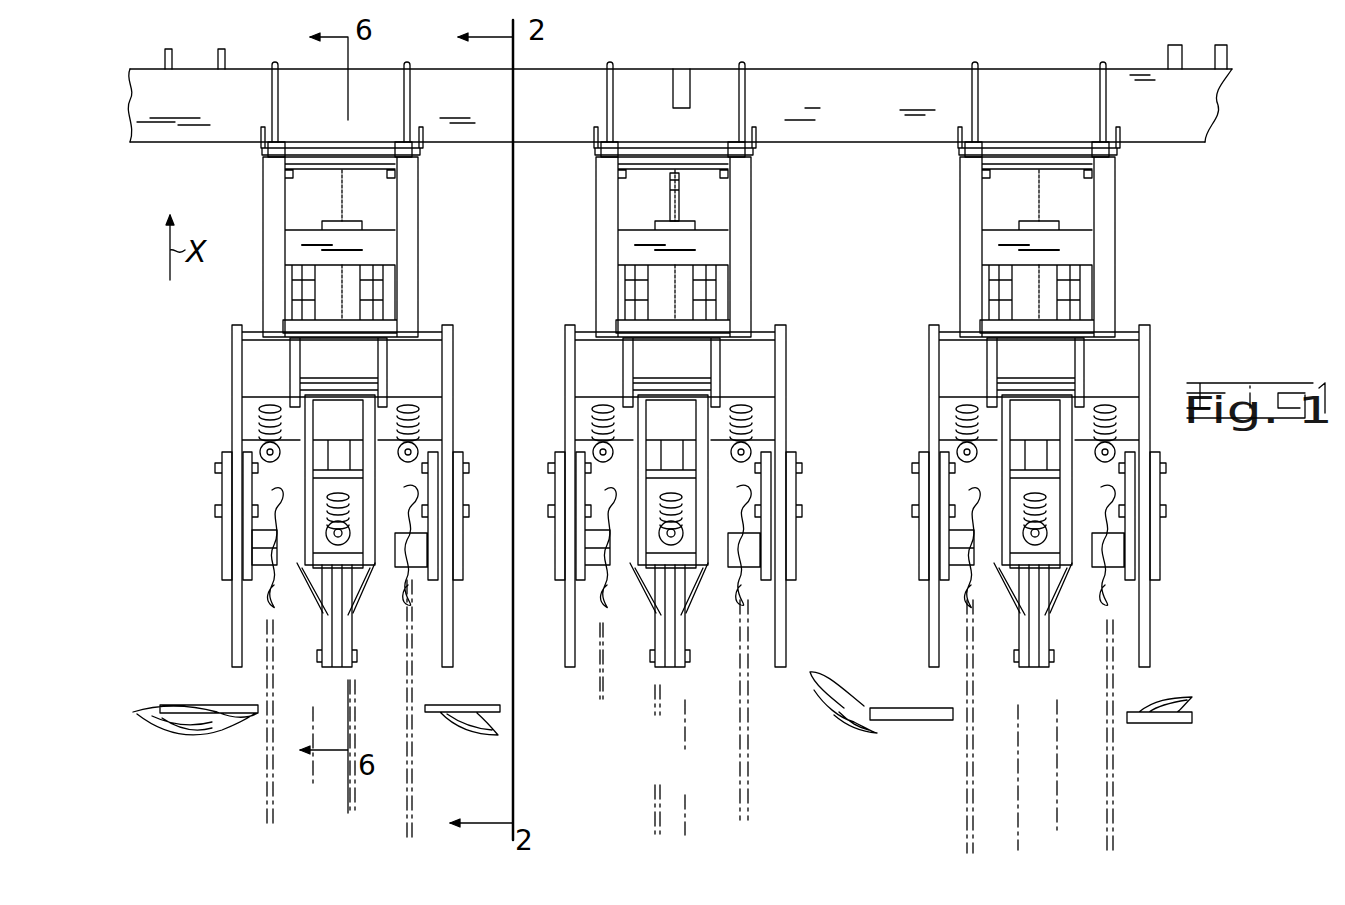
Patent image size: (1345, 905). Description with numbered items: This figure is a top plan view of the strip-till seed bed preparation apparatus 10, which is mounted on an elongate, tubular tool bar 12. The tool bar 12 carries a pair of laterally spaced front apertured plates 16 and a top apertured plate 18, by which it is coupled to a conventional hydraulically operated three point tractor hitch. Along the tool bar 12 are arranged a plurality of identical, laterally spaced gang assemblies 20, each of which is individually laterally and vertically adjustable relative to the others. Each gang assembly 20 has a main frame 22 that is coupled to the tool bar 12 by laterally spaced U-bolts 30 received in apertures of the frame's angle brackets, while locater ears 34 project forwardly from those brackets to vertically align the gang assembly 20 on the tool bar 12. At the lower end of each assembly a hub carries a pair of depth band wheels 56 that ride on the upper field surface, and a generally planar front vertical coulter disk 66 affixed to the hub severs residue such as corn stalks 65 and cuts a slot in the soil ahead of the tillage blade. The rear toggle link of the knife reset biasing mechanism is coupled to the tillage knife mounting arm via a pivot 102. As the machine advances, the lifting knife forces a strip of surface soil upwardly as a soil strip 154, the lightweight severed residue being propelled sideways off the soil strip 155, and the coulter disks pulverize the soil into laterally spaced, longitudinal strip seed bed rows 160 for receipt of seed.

The strip-till seed bed preparation apparatus 10 is at (197, 427).
The tool bar 12 is at (213, 122).
The front apertured plates 16 is at (175, 57).
The top apertured plate 18 is at (682, 77).
The gang assembly 20 is at (533, 486).
The main frame 22 is at (1090, 247).
The U-bolts 30 is at (970, 100).
The locater ears 34 is at (597, 130).
The depth band wheels 56 is at (653, 192).
The corn stalks 65 is at (881, 677).
The front vertical coulter disk 66 is at (222, 556).
The pivot 102 is at (400, 626).
The soil strip 154 is at (1115, 697).
The soil strip 155 is at (210, 553).
The strip seed bed rows 160 is at (316, 760).